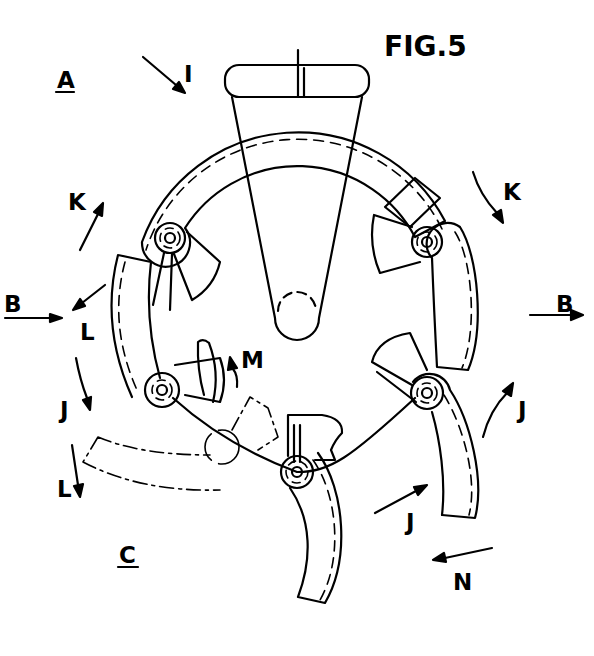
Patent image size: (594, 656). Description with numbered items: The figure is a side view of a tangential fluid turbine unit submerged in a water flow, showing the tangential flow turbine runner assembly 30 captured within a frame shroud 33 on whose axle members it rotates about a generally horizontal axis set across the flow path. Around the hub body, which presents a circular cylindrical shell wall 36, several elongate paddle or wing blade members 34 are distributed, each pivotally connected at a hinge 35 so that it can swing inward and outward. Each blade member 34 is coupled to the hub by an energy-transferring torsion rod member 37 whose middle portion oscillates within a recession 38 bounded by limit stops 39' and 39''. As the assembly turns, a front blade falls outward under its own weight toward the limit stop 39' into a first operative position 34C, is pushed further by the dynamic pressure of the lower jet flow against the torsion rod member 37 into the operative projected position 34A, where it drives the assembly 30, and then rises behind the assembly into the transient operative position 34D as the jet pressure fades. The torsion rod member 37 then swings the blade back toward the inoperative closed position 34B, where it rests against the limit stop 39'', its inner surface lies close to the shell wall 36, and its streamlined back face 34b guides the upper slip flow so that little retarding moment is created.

The tangential flow turbine runner assembly 30 is at (540, 68).
The frame shroud 33 is at (343, 127).
The paddle or wing blade member 34 is at (322, 548).
The operative projected position 34A is at (293, 529).
The inoperative closed position 34B is at (68, 268).
The first operative position 34C is at (111, 502).
The transient operative position 34D is at (507, 489).
The back face 34b is at (165, 188).
The hinge 35 is at (280, 486).
The circular cylindrical shell wall 36 is at (363, 452).
The torsion rod member 37 is at (205, 359).
The recession 38 is at (210, 357).
The limit stop 39' is at (307, 425).
The limit stop 39'' is at (416, 197).